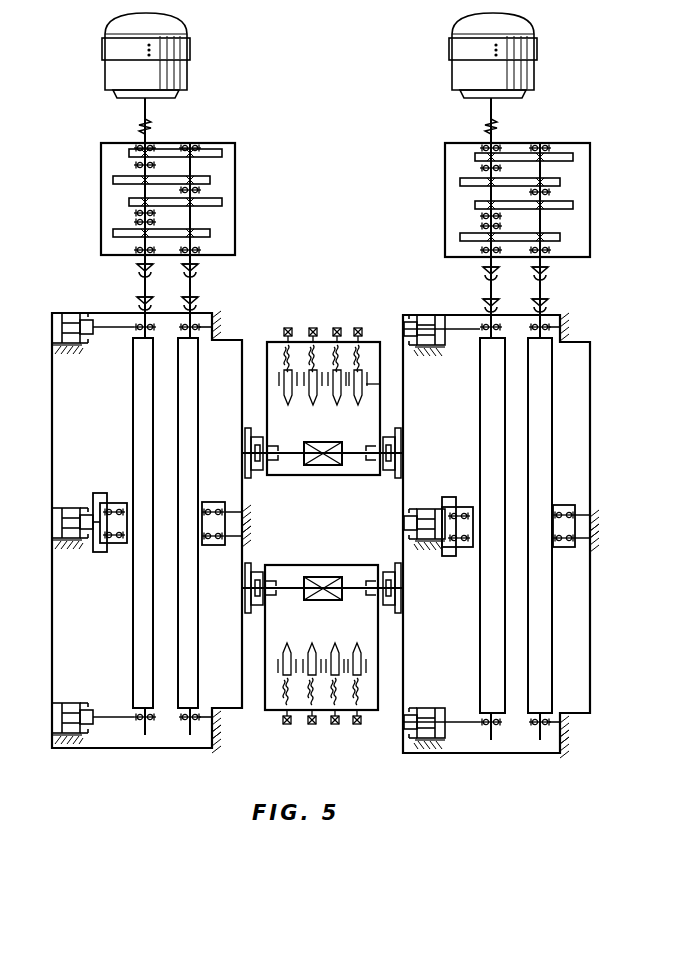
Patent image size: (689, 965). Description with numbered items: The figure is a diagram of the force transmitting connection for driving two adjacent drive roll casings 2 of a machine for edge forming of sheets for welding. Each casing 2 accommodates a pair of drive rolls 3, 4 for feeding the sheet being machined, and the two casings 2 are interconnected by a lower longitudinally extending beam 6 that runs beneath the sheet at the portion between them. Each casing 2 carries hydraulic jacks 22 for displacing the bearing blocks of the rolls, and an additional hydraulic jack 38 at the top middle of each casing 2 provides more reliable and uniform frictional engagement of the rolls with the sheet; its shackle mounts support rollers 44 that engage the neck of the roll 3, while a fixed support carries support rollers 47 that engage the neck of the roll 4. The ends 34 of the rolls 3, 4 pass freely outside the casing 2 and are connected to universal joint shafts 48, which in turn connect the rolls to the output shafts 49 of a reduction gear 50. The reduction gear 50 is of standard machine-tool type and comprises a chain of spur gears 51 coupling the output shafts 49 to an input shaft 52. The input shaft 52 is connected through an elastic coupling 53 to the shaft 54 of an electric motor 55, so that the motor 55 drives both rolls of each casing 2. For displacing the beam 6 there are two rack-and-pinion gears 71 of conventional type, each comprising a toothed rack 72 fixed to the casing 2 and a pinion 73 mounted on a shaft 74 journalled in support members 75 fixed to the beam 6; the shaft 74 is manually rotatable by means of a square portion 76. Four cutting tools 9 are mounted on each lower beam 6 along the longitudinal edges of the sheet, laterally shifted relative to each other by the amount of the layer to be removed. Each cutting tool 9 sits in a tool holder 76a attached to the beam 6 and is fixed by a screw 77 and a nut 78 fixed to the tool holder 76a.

The casing 2 is at (52, 606).
The drive roll 3 is at (133, 400).
The drive roll 4 is at (198, 412).
The lower longitudinally extending beam 6 is at (275, 342).
The cutting tool 9 is at (292, 650).
The hydraulic jack 22 is at (60, 315).
The roll end 34 is at (140, 325).
The additional hydraulic jack 38 is at (52, 520).
The support roller 44 is at (112, 493).
The support roller 47 is at (214, 502).
The universal joint shaft 48 is at (194, 268).
The output shaft 49 is at (150, 268).
The reduction gear 50 is at (235, 237).
The spur gear 51 is at (200, 178).
The input shaft 52 is at (150, 137).
The elastic coupling 53 is at (135, 144).
The motor shaft 54 is at (137, 124).
The electric motor 55 is at (190, 62).
The rack-and-pinion gear 71 is at (254, 560).
The toothed rack 72 is at (262, 440).
The pinion 73 is at (247, 448).
The shaft 74 is at (292, 590).
The support member 75 is at (366, 478).
The square portion 76 is at (325, 577).
The tool holder 76a is at (380, 384).
The screw 77 is at (292, 350).
The nut 78 is at (282, 355).